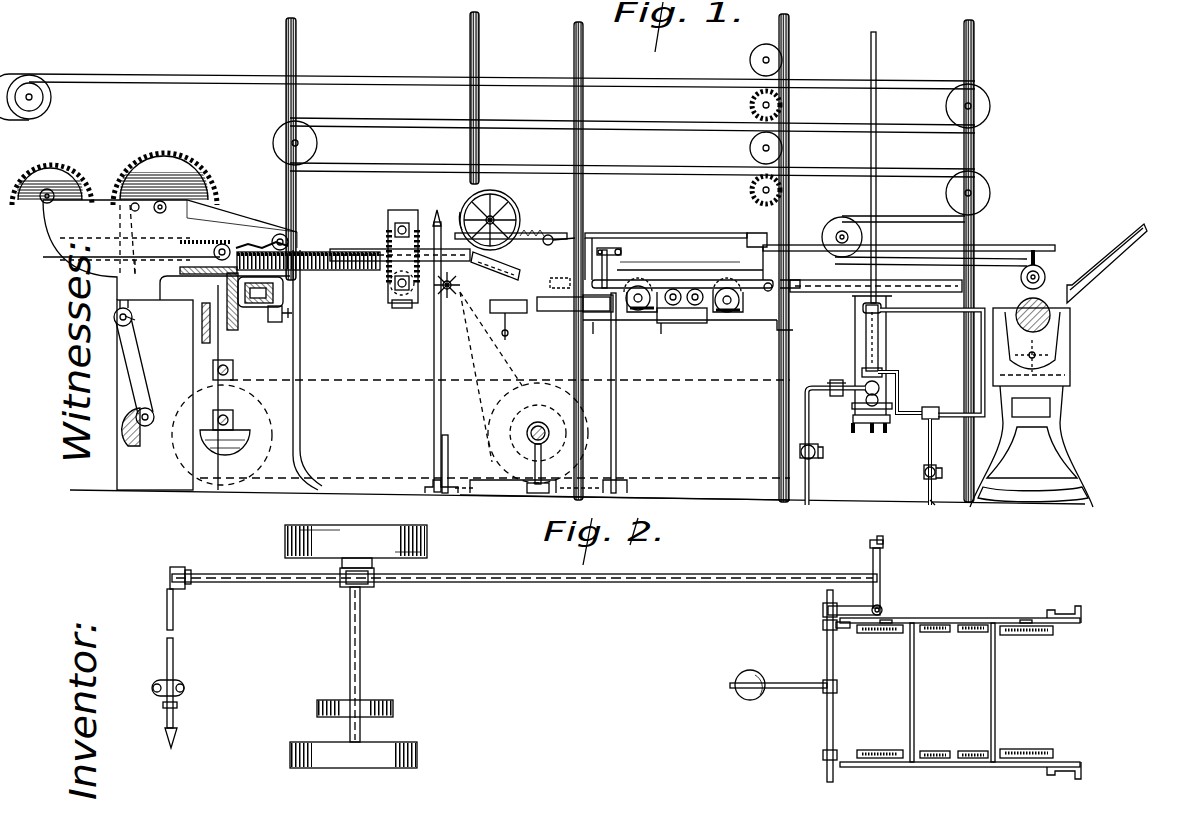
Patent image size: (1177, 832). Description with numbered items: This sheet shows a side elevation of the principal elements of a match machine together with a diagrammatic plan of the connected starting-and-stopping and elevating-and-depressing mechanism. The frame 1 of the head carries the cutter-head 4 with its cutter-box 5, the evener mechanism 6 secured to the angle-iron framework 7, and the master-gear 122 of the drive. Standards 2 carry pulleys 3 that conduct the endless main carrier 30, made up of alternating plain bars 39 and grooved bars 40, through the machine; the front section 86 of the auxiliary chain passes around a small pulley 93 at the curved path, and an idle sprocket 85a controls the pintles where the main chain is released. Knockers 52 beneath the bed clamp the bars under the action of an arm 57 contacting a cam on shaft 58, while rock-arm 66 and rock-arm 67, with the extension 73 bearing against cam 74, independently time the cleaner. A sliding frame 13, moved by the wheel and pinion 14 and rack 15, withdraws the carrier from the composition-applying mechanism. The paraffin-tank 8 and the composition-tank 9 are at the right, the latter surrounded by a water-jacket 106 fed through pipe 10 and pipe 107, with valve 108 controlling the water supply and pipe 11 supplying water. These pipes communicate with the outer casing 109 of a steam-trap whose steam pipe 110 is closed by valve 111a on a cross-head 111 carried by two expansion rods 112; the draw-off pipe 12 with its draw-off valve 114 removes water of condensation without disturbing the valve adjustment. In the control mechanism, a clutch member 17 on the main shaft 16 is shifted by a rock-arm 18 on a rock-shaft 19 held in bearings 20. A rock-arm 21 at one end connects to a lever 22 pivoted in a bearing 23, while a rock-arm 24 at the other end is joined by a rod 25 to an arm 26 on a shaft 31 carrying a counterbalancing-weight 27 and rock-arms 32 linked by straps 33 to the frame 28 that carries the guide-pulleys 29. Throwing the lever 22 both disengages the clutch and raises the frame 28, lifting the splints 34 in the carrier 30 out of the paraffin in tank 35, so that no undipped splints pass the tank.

In FIG. 1, the frame of the head 1 is at (172, 331).
In FIG. 1, the standards 2 is at (287, 100).
In FIG. 1, the pulleys 3 is at (52, 102).
In FIG. 1, the cutter-head 4 is at (255, 305).
In FIG. 1, the cutter-box 5 is at (248, 297).
In FIG. 1, the evener mechanism 6 is at (403, 256).
In FIG. 1, the angle-iron or framework 7 is at (360, 258).
In FIG. 1, the paraffin-tank 8 is at (618, 323).
In FIG. 1, the composition-tank 9 is at (1045, 335).
In FIG. 1, the hot-water-circulating system 10 is at (930, 322).
In FIG. 1, the pipe 11 is at (938, 502).
In FIG. 1, the condensed-water-draw-off pipe 12 is at (753, 428).
In FIG. 1, the sliding frame 13 is at (1045, 240).
In FIG. 1, the wheel and pinion 14 is at (512, 205).
In FIG. 1, the rack 15 is at (516, 232).
In FIG. 1, the main shaft 16 is at (550, 428).
In FIG. 2, the main shaft 16 is at (350, 645).
In FIG. 1, the clutch member 17 is at (530, 434).
In FIG. 2, the clutch member 17 is at (358, 568).
In FIG. 2, the rock-arm 18 is at (380, 583).
In FIG. 1, the rock-shaft 19 is at (520, 500).
In FIG. 2, the rock-shaft 19 is at (548, 583).
In FIG. 1, the bearings 20 is at (480, 493).
In FIG. 1, the rock-arm 21 is at (435, 461).
In FIG. 2, the rock-arm 21 is at (172, 572).
In FIG. 1, the lever 22 is at (434, 352).
In FIG. 2, the lever 22 is at (175, 720).
In FIG. 1, the bearing 23 is at (450, 494).
In FIG. 2, the bearing 23 is at (183, 682).
In FIG. 1, the rock-arm 24 is at (625, 480).
In FIG. 2, the rock-arm 24 is at (868, 556).
In FIG. 2, the rod 25 is at (882, 582).
In FIG. 1, the arm 26 is at (618, 250).
In FIG. 2, the arm 26 is at (833, 606).
In FIG. 1, the counterbalancing-weight 27 is at (548, 246).
In FIG. 2, the counterbalancing-weight 27 is at (738, 676).
In FIG. 1, the frame 28 is at (730, 290).
In FIG. 2, the frame 28 is at (962, 616).
In FIG. 1, the guide-pulleys 29 is at (738, 304).
In FIG. 2, the guide-pulleys 29 is at (965, 636).
In FIG. 1, the main carrier 30 is at (180, 64).
In FIG. 1, the shaft 31 is at (603, 246).
In FIG. 2, the shaft 31 is at (827, 664).
In FIG. 1, the rock-arms 32 is at (670, 262).
In FIG. 2, the rock-arms 32 is at (845, 626).
In FIG. 1, the straps 33 is at (672, 250).
In FIG. 1, the splints 34 is at (370, 280).
In FIG. 1, the tank 35 is at (708, 322).
In FIG. 1, the bars 39 is at (318, 248).
In FIG. 1, the bars 40 is at (330, 252).
In FIG. 1, the knockers 52 is at (205, 250).
In FIG. 1, the arm 57 is at (126, 356).
In FIG. 1, the shaft 58 is at (152, 414).
In FIG. 1, the rock-arm 66 is at (125, 258).
In FIG. 1, the rock-arm 67 is at (120, 220).
In FIG. 1, the extension 73 is at (140, 372).
In FIG. 1, the cam 74 is at (150, 440).
In FIG. 1, the idle sprocket 85a is at (80, 168).
In FIG. 1, the forward section of auxiliary chain 86 is at (280, 236).
In FIG. 1, the pulley 93 is at (245, 245).
In FIG. 1, the water-jacket 106 is at (1065, 354).
In FIG. 1, the pipe 107 is at (950, 412).
In FIG. 1, the valve 108 is at (925, 471).
In FIG. 1, the outer casing of steam-trap 109 is at (855, 327).
In FIG. 1, the steam pipe 110 is at (876, 57).
In FIG. 1, the cross-head 111 is at (870, 425).
In FIG. 1, the valve 111a is at (880, 400).
In FIG. 1, the rods 112 is at (880, 344).
In FIG. 1, the draw-off valve 114 is at (800, 459).
In FIG. 1, the master-gear 122 is at (205, 170).